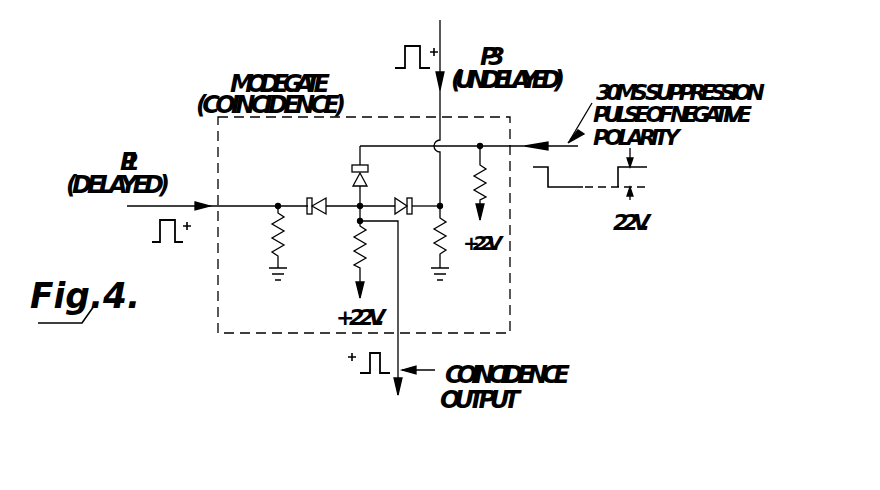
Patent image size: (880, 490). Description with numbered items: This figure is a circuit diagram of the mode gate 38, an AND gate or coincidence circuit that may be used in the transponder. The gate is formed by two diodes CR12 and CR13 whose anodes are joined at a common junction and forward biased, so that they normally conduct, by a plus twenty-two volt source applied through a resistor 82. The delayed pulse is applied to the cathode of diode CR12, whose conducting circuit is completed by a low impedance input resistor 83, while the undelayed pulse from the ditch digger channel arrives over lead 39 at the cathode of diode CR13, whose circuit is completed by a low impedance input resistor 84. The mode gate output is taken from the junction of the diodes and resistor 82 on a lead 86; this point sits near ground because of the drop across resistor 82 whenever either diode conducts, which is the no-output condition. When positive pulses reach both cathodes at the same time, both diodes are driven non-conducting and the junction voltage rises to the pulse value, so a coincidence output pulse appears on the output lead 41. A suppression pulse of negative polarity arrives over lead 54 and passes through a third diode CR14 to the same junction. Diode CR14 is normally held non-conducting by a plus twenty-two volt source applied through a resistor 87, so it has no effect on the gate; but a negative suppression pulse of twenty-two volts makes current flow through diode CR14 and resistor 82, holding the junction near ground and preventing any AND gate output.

The mode gate 38 is at (216, 141).
The lead 39 is at (441, 38).
The lead 54 is at (524, 145).
The resistor 82 is at (356, 243).
The resistor 83 is at (273, 243).
The resistor 84 is at (448, 246).
The resistor 87 is at (475, 185).
The lead 86 is at (399, 328).
The output lead 41 is at (401, 357).
The diode CR12 is at (344, 195).
The diode CR13 is at (410, 195).
The diode CR14 is at (354, 165).